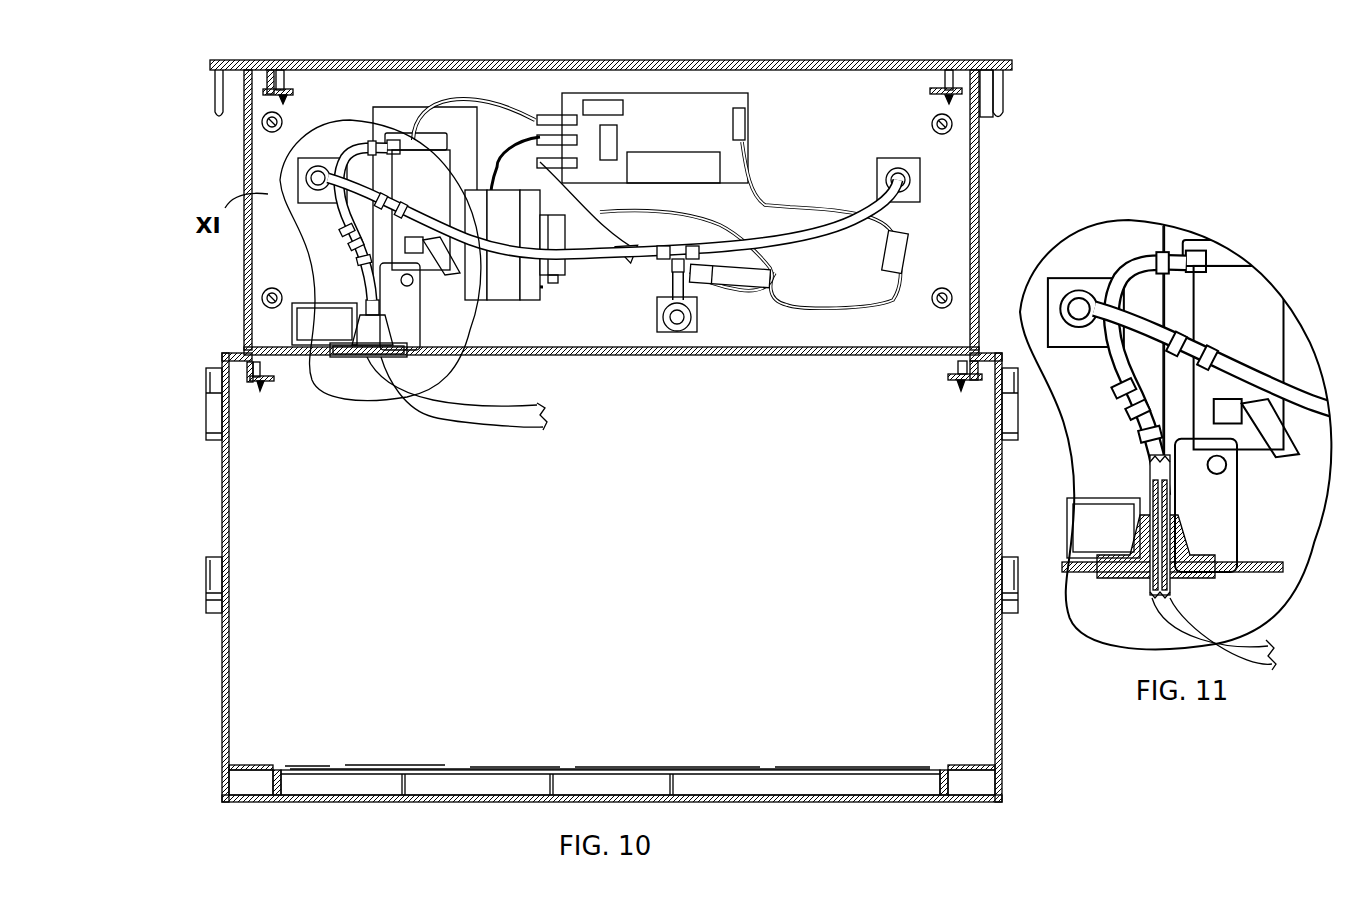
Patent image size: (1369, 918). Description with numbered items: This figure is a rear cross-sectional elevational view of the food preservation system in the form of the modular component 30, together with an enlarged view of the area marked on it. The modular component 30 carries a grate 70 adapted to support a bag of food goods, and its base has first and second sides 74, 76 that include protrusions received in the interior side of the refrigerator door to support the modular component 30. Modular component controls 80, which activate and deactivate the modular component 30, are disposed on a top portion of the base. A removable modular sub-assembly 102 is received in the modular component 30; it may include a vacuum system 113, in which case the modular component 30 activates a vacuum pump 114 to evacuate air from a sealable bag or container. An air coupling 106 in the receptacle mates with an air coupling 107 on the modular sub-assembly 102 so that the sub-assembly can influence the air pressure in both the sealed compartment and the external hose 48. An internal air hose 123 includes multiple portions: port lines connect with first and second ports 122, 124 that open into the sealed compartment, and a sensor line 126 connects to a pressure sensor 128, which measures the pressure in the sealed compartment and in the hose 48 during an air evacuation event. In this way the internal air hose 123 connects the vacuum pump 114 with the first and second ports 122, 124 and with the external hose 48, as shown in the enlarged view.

In FIG. 10, the modular component 30 is at (1040, 61).
In FIG. 10, the air hose 48 is at (467, 408).
In FIG. 11, the air hose 48 is at (1214, 634).
In FIG. 10, the grate 70 is at (785, 760).
In FIG. 10, the first side 74 is at (220, 483).
In FIG. 10, the second side 76 is at (1003, 497).
In FIG. 10, the modular component controls 80 is at (720, 108).
In FIG. 10, the modular sub-assembly 102 is at (829, 56).
In FIG. 10, the air coupling 106 is at (350, 362).
In FIG. 11, the air coupling 106 is at (1123, 582).
In FIG. 10, the air coupling 107 is at (380, 317).
In FIG. 11, the air coupling 107 is at (1180, 518).
In FIG. 10, the vacuum system 113 is at (792, 88).
In FIG. 10, the vacuum pump 114 is at (452, 167).
In FIG. 10, the first port 122 is at (318, 170).
In FIG. 11, the first port 122 is at (1072, 298).
In FIG. 10, the internal air hose 123 is at (840, 230).
In FIG. 11, the internal air hose 123 is at (1250, 378).
In FIG. 10, the second port 124 is at (918, 192).
In FIG. 10, the sensor line 126 is at (697, 302).
In FIG. 10, the pressure sensor 128 is at (680, 308).